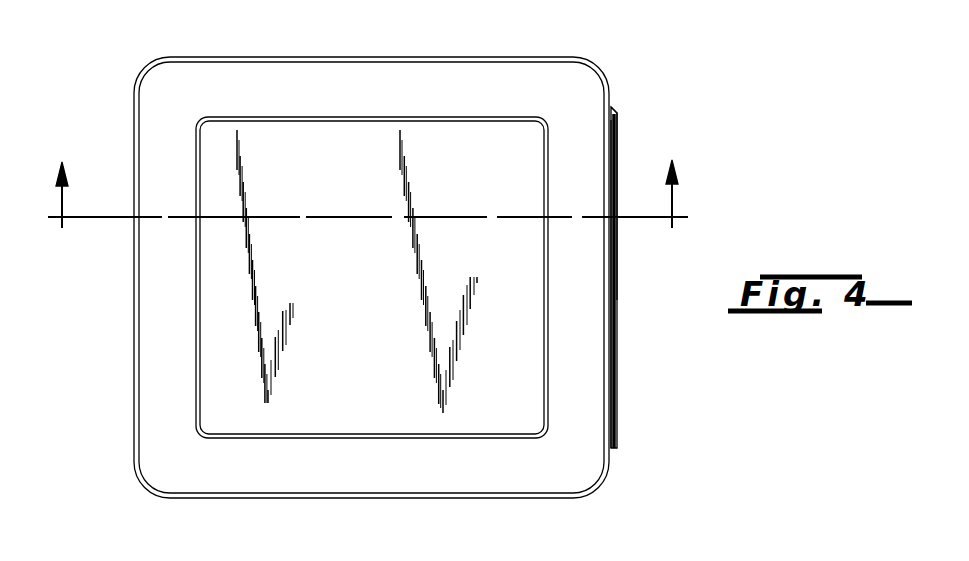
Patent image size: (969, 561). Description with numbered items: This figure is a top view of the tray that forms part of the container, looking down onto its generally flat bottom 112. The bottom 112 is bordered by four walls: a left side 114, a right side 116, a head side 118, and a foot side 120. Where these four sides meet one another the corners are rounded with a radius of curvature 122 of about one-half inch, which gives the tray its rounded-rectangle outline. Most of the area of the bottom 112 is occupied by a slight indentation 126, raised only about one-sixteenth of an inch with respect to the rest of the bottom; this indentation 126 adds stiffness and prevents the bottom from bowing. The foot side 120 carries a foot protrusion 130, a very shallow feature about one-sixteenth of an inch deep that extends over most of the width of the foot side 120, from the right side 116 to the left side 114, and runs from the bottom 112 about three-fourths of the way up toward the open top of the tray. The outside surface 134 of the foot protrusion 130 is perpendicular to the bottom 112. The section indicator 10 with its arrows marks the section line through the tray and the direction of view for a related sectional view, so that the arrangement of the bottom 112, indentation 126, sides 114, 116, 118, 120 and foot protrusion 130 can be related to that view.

The electronic device (section line) 10 is at (359, 176).
The bottom 112 is at (484, 185).
The left side 114 is at (393, 500).
The right side 116 is at (307, 58).
The head side 118 is at (137, 270).
The foot side 120 is at (617, 463).
The radius of curvature 122 is at (597, 73).
The indentation 126 is at (388, 409).
The foot protrusion 130 is at (618, 393).
The outside surface 134 is at (618, 358).